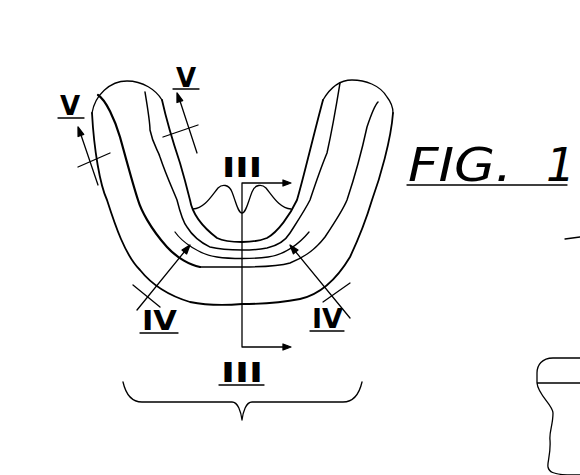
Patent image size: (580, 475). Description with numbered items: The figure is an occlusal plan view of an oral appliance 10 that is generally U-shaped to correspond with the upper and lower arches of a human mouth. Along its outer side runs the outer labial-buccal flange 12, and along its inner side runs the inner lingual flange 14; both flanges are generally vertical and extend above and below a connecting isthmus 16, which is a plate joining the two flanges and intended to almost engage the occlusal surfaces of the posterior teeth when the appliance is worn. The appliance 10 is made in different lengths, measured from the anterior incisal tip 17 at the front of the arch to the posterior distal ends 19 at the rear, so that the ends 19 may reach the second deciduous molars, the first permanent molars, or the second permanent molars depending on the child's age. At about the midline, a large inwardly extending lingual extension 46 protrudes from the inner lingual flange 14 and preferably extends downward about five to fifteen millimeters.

The appliance 10 is at (237, 58).
The outer labial-buccal flange 12 is at (360, 238).
The inner lingual flange 14 is at (204, 230).
The connecting isthmus 16 is at (347, 120).
The anterior incisal tip 17 is at (242, 418).
The posterior distal ends 19 is at (113, 67).
The lingual extension 46 is at (262, 205).